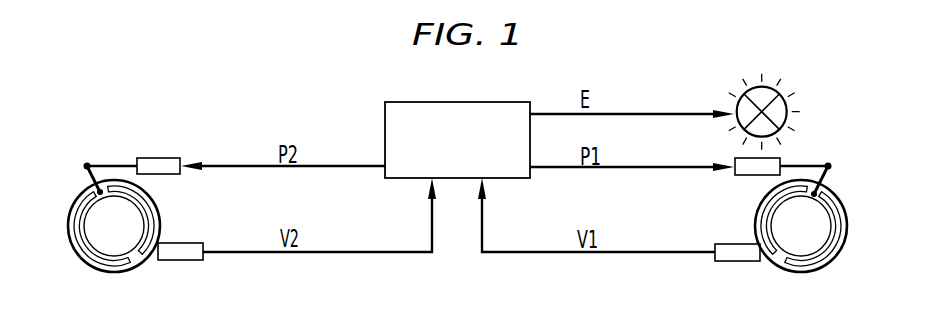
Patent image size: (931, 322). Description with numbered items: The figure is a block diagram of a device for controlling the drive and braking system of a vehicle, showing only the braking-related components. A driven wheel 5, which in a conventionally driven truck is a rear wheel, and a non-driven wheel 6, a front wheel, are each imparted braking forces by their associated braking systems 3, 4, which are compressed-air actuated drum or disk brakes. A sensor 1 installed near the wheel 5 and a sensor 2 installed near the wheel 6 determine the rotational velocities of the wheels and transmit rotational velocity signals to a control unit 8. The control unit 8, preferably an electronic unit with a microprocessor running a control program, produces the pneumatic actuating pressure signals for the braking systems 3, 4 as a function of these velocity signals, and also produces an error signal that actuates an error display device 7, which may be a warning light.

The sensor 1 is at (183, 261).
The sensor 2 is at (724, 263).
The braking system 3 is at (150, 158).
The braking system 4 is at (781, 159).
The wheel 5 is at (69, 212).
The wheel 6 is at (847, 230).
The error display device 7 is at (783, 98).
The control unit 8 is at (385, 123).